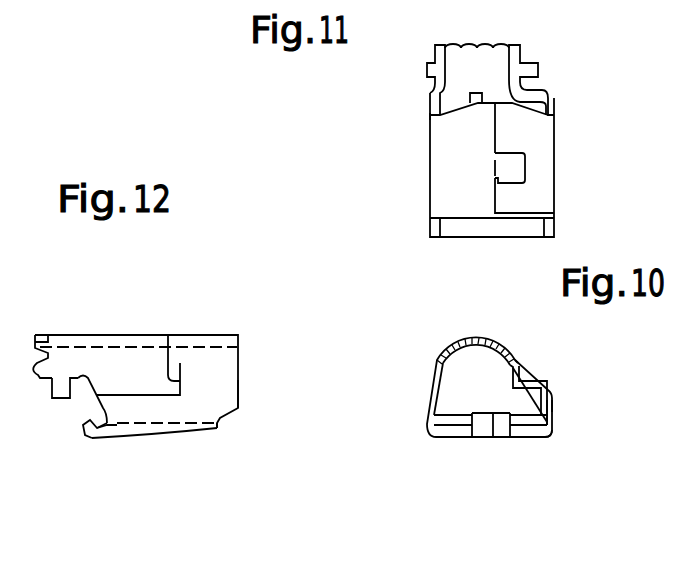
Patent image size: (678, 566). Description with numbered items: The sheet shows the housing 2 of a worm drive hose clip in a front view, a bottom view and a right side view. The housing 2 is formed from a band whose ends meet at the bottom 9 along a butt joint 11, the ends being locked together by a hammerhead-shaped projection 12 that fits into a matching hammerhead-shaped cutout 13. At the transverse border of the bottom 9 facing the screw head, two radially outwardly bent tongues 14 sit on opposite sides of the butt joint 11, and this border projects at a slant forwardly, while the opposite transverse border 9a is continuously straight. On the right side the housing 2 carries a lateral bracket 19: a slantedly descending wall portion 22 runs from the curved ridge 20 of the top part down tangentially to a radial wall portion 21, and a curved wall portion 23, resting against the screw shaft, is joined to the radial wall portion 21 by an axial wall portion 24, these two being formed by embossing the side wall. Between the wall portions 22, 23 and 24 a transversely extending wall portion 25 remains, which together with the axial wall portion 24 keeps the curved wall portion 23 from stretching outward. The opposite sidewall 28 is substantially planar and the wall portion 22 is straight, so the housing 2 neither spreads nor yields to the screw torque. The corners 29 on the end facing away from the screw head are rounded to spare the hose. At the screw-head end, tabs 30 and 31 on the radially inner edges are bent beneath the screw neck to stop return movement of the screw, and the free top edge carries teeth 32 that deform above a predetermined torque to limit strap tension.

In FIG. 11, the housing 2 is at (596, 152).
In FIG. 10, the housing 2 is at (529, 342).
In FIG. 12, the housing 2 is at (147, 310).
In FIG. 11, the bottom 9 is at (520, 133).
In FIG. 10, the bottom 9 is at (463, 440).
In FIG. 12, the bottom 9 is at (170, 432).
In FIG. 11, the transverse border 9a is at (463, 219).
In FIG. 12, the transverse border 9a is at (220, 427).
In FIG. 11, the butt joint 11 is at (495, 202).
In FIG. 11, the hammerhead-shaped projection 12 is at (515, 175).
In FIG. 11, the hammerhead-shaped cutout 13 is at (518, 164).
In FIG. 11, the tongues 14 is at (470, 93).
In FIG. 10, the tongues 14 is at (481, 428).
In FIG. 12, the tongues 14 is at (87, 433).
In FIG. 10, the lateral bracket 19 is at (563, 409).
In FIG. 10, the curved ridge 20 is at (463, 345).
In FIG. 12, the curved ridge 20 is at (195, 335).
In FIG. 10, the radial wall portion 21 is at (554, 398).
In FIG. 12, the radial wall portion 21 is at (140, 410).
In FIG. 12, the slantedly descending wall portion 22 is at (222, 370).
In FIG. 10, the curved wall portion 23 is at (527, 380).
In FIG. 12, the curved wall portion 23 is at (113, 353).
In FIG. 12, the axial wall portion 24 is at (107, 413).
In FIG. 10, the transversely extending wall portion 25 is at (525, 384).
In FIG. 12, the transversely extending wall portion 25 is at (168, 335).
In FIG. 10, the sidewall 28 is at (429, 380).
In FIG. 10, the corners 29 is at (640, 427).
In FIG. 12, the corners 29 is at (238, 415).
In FIG. 11, the tab 30 is at (427, 67).
In FIG. 10, the tab 30 is at (429, 397).
In FIG. 11, the tab 31 is at (537, 67).
In FIG. 10, the tab 31 is at (547, 422).
In FIG. 12, the tab 31 is at (58, 398).
In FIG. 11, the teeth 32 is at (545, 26).
In FIG. 10, the teeth 32 is at (468, 341).
In FIG. 12, the teeth 32 is at (31, 332).